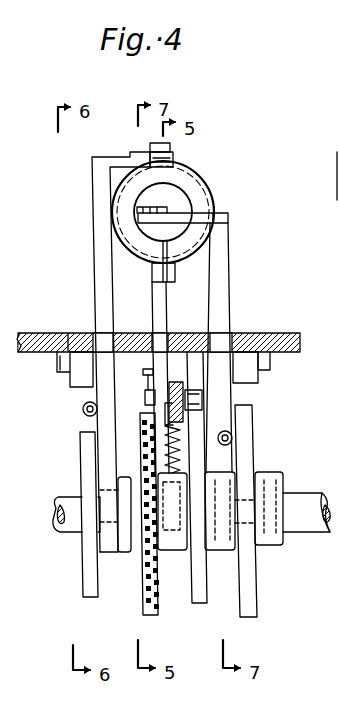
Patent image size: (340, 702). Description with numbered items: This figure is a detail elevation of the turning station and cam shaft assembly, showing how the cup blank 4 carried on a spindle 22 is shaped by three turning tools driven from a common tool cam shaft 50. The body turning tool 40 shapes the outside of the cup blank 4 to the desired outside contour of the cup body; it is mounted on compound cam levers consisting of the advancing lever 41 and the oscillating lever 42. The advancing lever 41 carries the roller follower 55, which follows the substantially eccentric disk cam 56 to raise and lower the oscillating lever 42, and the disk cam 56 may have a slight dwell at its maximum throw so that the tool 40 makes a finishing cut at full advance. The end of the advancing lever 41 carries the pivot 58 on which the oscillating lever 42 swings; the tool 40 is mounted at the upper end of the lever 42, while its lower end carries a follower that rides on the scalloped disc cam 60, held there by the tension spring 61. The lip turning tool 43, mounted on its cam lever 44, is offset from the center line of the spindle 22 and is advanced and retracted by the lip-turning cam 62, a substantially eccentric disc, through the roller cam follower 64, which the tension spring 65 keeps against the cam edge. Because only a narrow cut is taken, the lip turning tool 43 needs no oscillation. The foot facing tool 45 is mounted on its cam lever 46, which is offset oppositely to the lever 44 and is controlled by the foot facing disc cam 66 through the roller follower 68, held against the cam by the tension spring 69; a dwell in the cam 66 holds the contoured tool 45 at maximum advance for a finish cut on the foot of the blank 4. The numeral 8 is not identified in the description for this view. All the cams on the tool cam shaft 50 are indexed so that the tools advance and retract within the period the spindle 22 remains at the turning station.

The cup blank 4 is at (211, 187).
The adjacent member (partial) 8 is at (336, 190).
The spindle 22 is at (163, 272).
The body turning tool 40 is at (172, 262).
The advancing lever 41 is at (185, 368).
The oscillating lever 42 is at (167, 302).
The lip turning tool 43 is at (143, 152).
The cam lever 44 is at (95, 253).
The foot facing tool 45 is at (138, 218).
The cam lever 46 is at (230, 245).
The tool cam shaft 50 is at (295, 492).
The roller follower 55 is at (199, 396).
The disk cam 56 is at (192, 590).
The pivot 58 is at (146, 375).
The scalloped disc cam 60 is at (143, 596).
The tension spring 61 is at (180, 458).
The lip-turning cam 62 is at (84, 588).
The roller cam follower 64 is at (80, 527).
The tension spring 65 is at (83, 409).
The foot facing disc cam 66 is at (256, 592).
The roller follower 68 is at (250, 510).
The tension spring 69 is at (225, 431).